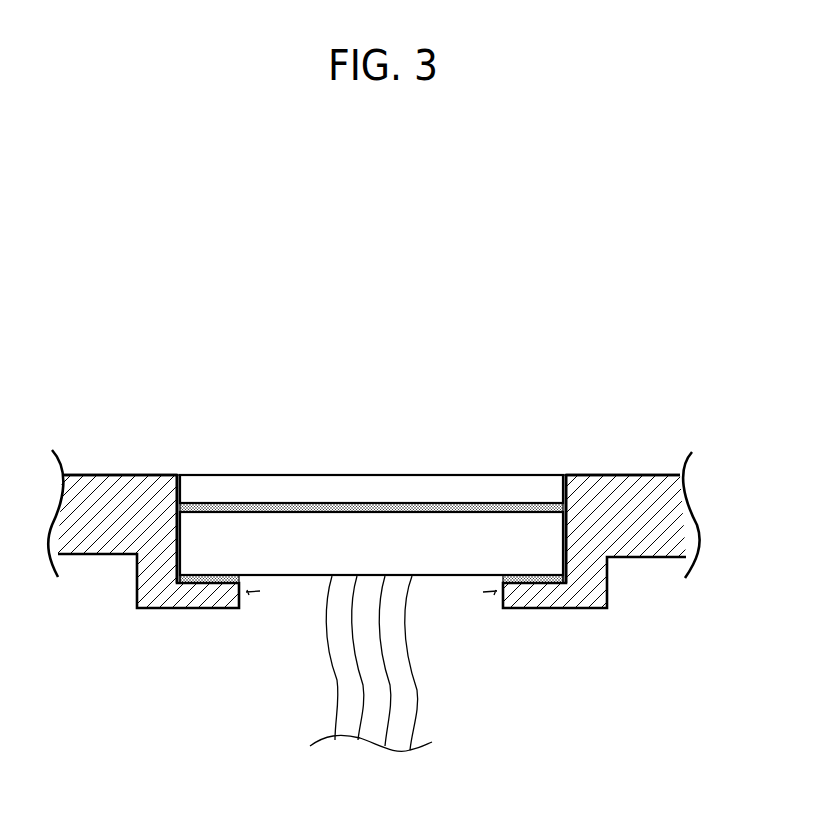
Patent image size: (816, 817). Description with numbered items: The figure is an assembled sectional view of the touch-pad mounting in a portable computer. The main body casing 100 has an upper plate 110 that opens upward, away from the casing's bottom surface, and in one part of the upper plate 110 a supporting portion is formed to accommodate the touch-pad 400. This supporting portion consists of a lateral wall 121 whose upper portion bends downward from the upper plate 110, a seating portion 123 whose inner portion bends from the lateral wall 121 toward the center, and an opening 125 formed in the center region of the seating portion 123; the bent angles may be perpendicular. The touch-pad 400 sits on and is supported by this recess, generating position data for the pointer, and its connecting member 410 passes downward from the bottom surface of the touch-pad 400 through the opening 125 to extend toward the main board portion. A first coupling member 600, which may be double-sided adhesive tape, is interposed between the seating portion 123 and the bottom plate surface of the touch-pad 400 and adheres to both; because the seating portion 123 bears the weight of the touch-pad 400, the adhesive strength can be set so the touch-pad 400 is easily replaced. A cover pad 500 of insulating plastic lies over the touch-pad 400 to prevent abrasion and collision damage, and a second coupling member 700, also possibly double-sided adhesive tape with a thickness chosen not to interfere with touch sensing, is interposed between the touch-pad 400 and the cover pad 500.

The main body casing 100 is at (94, 556).
The upper plate 110 is at (108, 474).
The lateral wall 121 is at (182, 484).
The seating portion 123 is at (206, 584).
The opening 125 is at (253, 596).
The touch-pad 400 is at (297, 535).
The connecting member 410 is at (352, 703).
The cover pad 500 is at (412, 492).
The first coupling member 600 is at (210, 478).
The second coupling member 700 is at (357, 508).